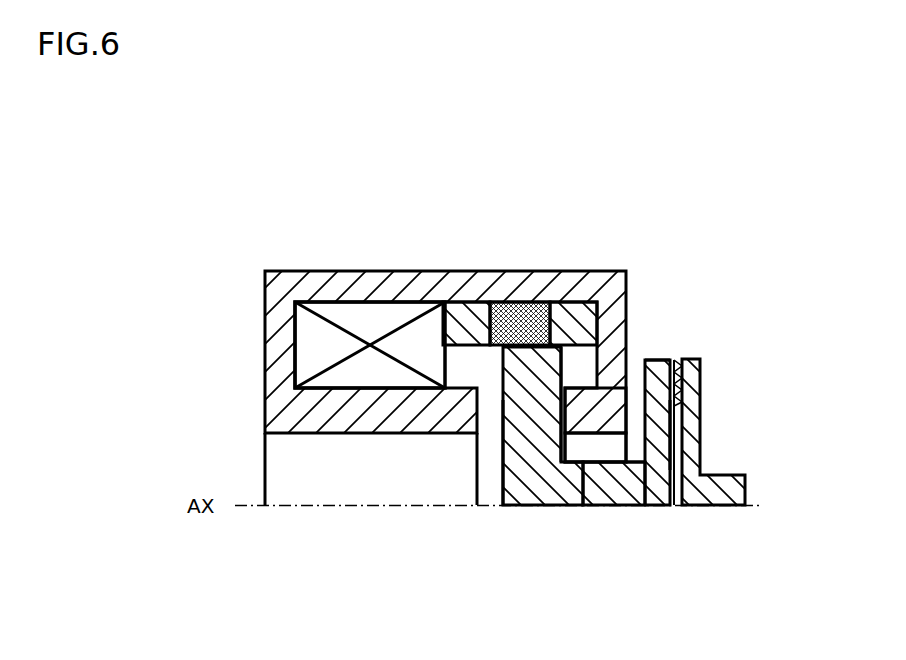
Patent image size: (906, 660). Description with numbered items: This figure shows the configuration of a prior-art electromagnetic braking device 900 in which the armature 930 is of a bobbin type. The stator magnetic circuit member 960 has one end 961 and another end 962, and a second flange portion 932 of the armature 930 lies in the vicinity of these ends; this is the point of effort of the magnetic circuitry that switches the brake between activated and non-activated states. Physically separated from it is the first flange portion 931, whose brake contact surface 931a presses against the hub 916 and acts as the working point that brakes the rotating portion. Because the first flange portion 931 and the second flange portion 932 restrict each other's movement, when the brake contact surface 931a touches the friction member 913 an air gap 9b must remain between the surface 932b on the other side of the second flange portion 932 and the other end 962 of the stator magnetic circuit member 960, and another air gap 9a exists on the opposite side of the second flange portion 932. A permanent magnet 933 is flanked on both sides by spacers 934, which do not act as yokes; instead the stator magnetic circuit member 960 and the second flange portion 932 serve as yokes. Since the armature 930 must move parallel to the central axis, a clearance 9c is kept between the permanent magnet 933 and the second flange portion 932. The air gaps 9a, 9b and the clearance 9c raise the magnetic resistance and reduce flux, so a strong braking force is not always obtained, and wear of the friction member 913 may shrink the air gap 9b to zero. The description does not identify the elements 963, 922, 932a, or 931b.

The electromagnetic braking device 900 is at (776, 200).
The stator magnetic circuit member 960 is at (618, 312).
The one end of the stator magnetic circuit member 961 is at (463, 433).
The other end of the stator magnetic circuit member 962 is at (600, 425).
The housing recess 963 is at (605, 450).
The coil 922 is at (355, 325).
The spacer 934 is at (462, 322).
The permanent magnet 933 is at (514, 322).
The second flange portion 932 is at (524, 458).
The yoke inner portion 932a is at (503, 457).
The surface on the other side of the second flange portion 932b is at (556, 393).
The air gap 9b is at (578, 485).
The first flange portion 931 is at (662, 435).
The brake contact surface 931a is at (670, 428).
The magnet upper end 931b is at (645, 372).
The friction member 913 is at (684, 378).
The hub 916 is at (702, 408).
The air gap 9a is at (490, 414).
The clearance 9c is at (490, 352).
The armature 930 is at (562, 492).